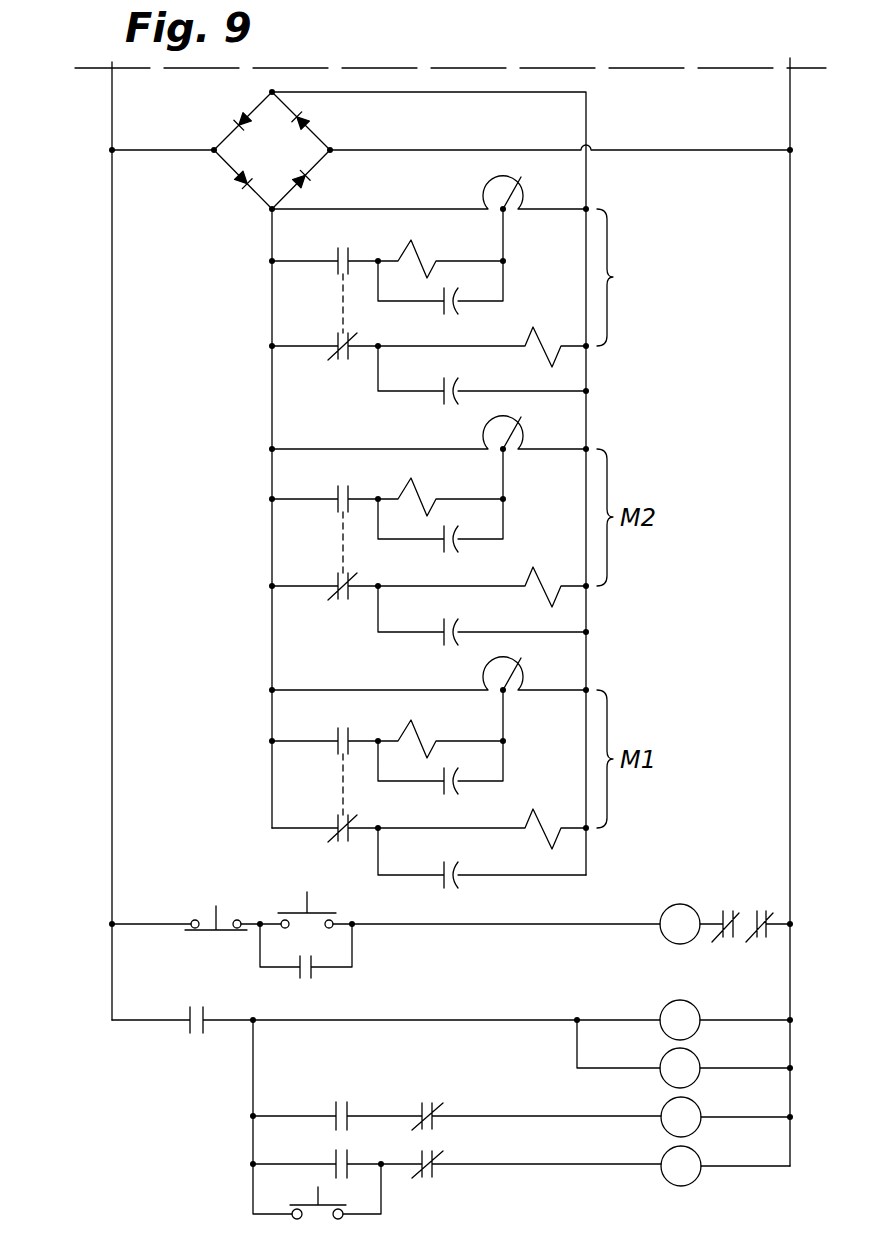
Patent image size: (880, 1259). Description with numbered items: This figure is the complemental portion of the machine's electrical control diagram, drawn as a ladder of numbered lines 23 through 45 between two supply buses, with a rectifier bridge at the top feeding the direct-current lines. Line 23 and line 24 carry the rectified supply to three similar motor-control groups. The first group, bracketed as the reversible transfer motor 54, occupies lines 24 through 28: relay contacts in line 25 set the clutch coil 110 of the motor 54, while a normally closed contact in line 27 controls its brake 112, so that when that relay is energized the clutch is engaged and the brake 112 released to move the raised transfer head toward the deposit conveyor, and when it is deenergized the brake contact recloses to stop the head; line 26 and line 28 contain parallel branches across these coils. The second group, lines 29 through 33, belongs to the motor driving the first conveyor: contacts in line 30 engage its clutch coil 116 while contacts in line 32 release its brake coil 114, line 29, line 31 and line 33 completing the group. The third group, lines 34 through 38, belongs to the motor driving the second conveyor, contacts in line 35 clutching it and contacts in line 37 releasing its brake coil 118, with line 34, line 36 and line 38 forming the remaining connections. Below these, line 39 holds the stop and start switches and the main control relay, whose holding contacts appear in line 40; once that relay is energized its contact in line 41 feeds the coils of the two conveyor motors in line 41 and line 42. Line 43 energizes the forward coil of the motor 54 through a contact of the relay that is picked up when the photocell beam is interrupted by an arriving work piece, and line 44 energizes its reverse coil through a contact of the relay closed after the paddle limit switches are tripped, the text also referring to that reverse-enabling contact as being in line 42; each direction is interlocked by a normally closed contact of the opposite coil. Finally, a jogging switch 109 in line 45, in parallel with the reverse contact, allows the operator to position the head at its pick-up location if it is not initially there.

The line 23 is at (425, 150).
The line 24 is at (324, 218).
The line 25 is at (283, 279).
The line 26 is at (281, 288).
The line 27 is at (324, 334).
The line 28 is at (324, 389).
The line 29 is at (324, 457).
The line 30 is at (283, 518).
The line 31 is at (281, 526).
The line 32 is at (324, 574).
The line 33 is at (324, 616).
The line 34 is at (324, 699).
The line 35 is at (283, 763).
The line 36 is at (281, 768).
The line 37 is at (324, 816).
The line 38 is at (323, 859).
The line 39 is at (426, 914).
The line 40 is at (206, 962).
The line 41 is at (426, 1015).
The line 42 is at (426, 1054).
The line 43 is at (426, 1083).
The line 44 is at (425, 1155).
The line 45 is at (220, 1196).
The reversible motor 54 is at (356, 304).
The jogging switch 109 is at (318, 1187).
The clutch coil 110 is at (417, 248).
The brake 112 is at (543, 343).
The brake coil 114 is at (543, 583).
The clutch coil 116 is at (417, 486).
The brake coil 118 is at (543, 825).